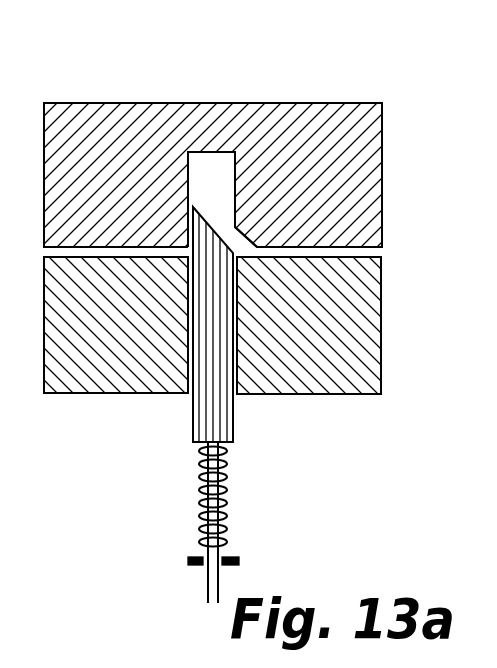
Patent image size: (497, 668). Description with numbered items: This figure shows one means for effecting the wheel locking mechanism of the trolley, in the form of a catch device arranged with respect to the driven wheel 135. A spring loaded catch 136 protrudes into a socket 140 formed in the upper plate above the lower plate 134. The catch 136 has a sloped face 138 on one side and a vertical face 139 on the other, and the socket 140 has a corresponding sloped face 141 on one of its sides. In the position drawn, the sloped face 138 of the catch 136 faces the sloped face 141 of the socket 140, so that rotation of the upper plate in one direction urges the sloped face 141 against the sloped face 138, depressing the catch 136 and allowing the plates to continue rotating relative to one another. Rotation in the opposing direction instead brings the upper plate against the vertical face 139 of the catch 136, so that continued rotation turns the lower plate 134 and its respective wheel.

The lower plate 134 is at (362, 380).
The driven wheel 135 is at (381, 247).
The catch 136 is at (246, 463).
The sloped face 138 is at (273, 133).
The vertical face 139 is at (193, 207).
The socket 140 is at (215, 168).
The sloped face 141 is at (273, 206).